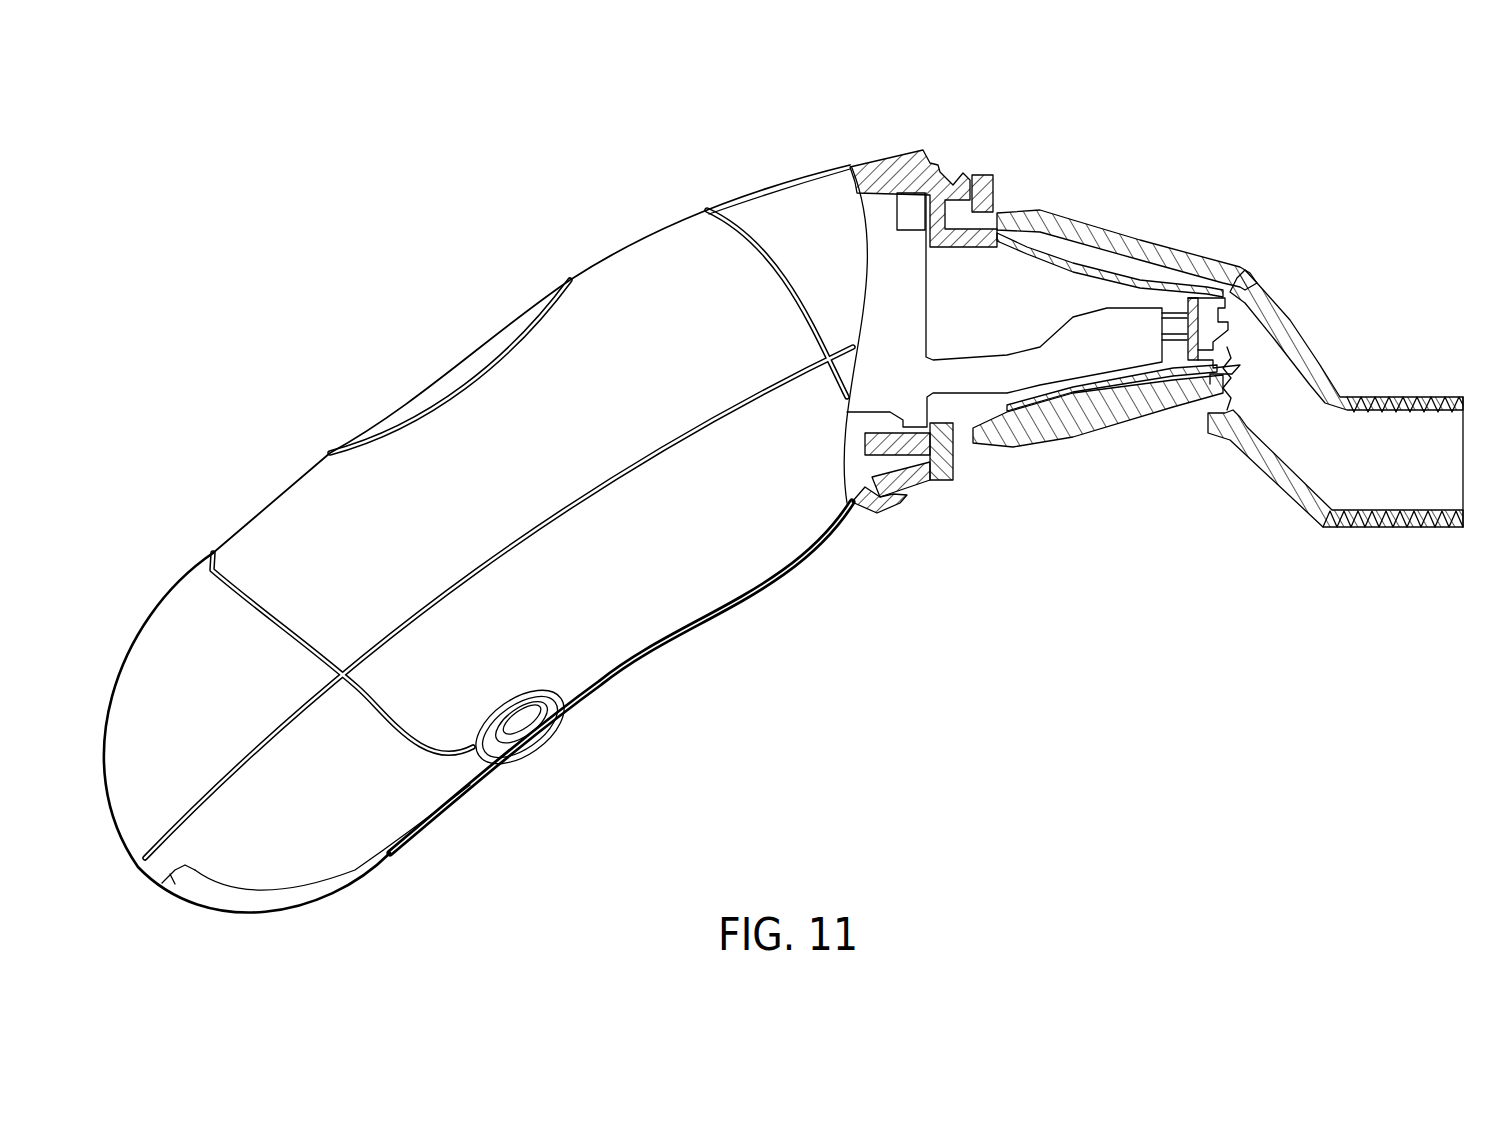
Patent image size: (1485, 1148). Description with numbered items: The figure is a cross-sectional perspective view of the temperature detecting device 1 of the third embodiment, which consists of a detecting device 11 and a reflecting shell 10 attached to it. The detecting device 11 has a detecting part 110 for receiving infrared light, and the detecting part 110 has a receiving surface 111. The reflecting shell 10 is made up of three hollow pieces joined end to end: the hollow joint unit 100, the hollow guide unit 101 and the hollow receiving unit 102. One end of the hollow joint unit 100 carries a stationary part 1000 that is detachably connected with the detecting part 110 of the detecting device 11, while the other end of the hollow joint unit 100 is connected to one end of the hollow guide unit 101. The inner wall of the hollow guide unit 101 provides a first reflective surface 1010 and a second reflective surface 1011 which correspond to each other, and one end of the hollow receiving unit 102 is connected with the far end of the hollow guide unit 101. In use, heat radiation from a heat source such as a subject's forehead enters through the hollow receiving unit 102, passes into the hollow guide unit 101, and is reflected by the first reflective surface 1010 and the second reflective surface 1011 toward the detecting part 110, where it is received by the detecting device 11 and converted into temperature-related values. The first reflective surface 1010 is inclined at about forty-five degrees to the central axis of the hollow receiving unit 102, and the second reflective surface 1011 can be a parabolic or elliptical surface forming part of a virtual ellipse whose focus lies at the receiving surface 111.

The temperature detecting device 1 is at (188, 93).
The reflecting shell 10 is at (1263, 276).
The hollow joint unit 100 is at (1153, 247).
The stationary part 1000 is at (993, 198).
The hollow guide unit 101 is at (1400, 52).
The first reflective surface 1010 is at (1270, 463).
The second reflective surface 1011 is at (1310, 357).
The hollow receiving unit 102 is at (1413, 403).
The detecting device 11 is at (889, 150).
The detecting part 110 is at (1070, 263).
The receiving surface 111 is at (1205, 325).